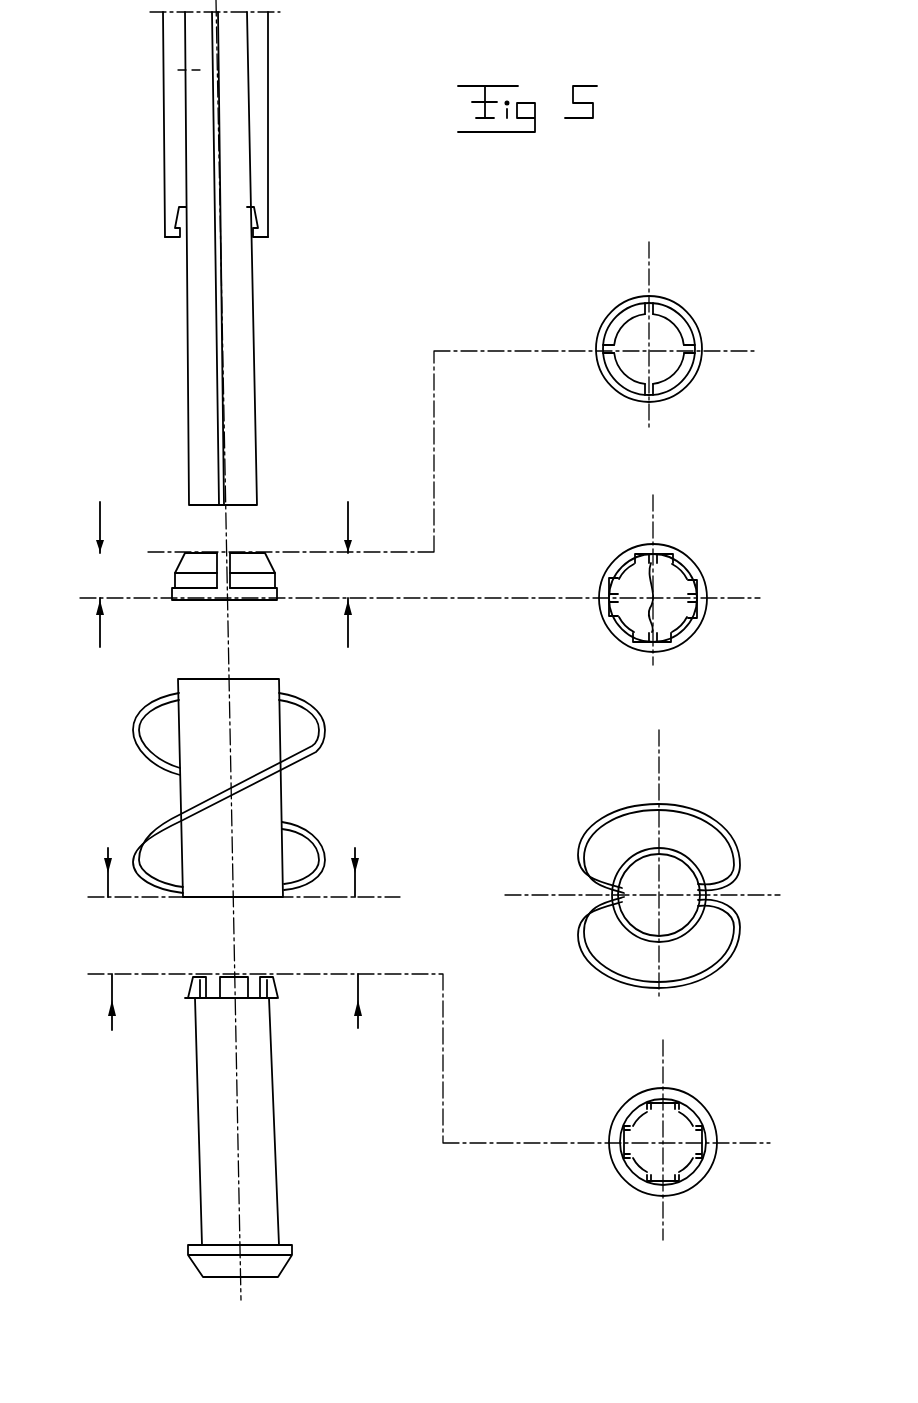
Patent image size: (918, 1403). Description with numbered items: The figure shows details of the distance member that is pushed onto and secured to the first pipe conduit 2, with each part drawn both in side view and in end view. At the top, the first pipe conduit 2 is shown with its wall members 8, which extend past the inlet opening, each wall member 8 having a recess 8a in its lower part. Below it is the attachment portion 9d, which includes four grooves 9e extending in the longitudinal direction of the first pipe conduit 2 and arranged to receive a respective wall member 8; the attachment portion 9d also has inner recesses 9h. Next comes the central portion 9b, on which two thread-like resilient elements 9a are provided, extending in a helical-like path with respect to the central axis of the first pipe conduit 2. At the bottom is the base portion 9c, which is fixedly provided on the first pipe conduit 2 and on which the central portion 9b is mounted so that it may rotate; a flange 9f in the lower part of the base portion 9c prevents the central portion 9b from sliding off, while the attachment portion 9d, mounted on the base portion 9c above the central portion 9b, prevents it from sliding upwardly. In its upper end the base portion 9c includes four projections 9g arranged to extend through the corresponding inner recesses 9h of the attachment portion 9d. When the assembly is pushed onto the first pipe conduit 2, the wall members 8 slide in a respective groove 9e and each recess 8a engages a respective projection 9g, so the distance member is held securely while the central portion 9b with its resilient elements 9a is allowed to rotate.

The first pipe conduit 2 is at (237, 42).
The wall member 8 is at (173, 113).
The recess 8a is at (178, 222).
The resilient elements 9a is at (307, 830).
The central portion 9b is at (198, 792).
The base portion 9c is at (258, 1108).
The attachment portion 9d is at (177, 583).
The grooves 9e is at (226, 552).
The flange 9f is at (280, 1266).
The projections 9g is at (197, 976).
The inner recesses 9h is at (676, 610).